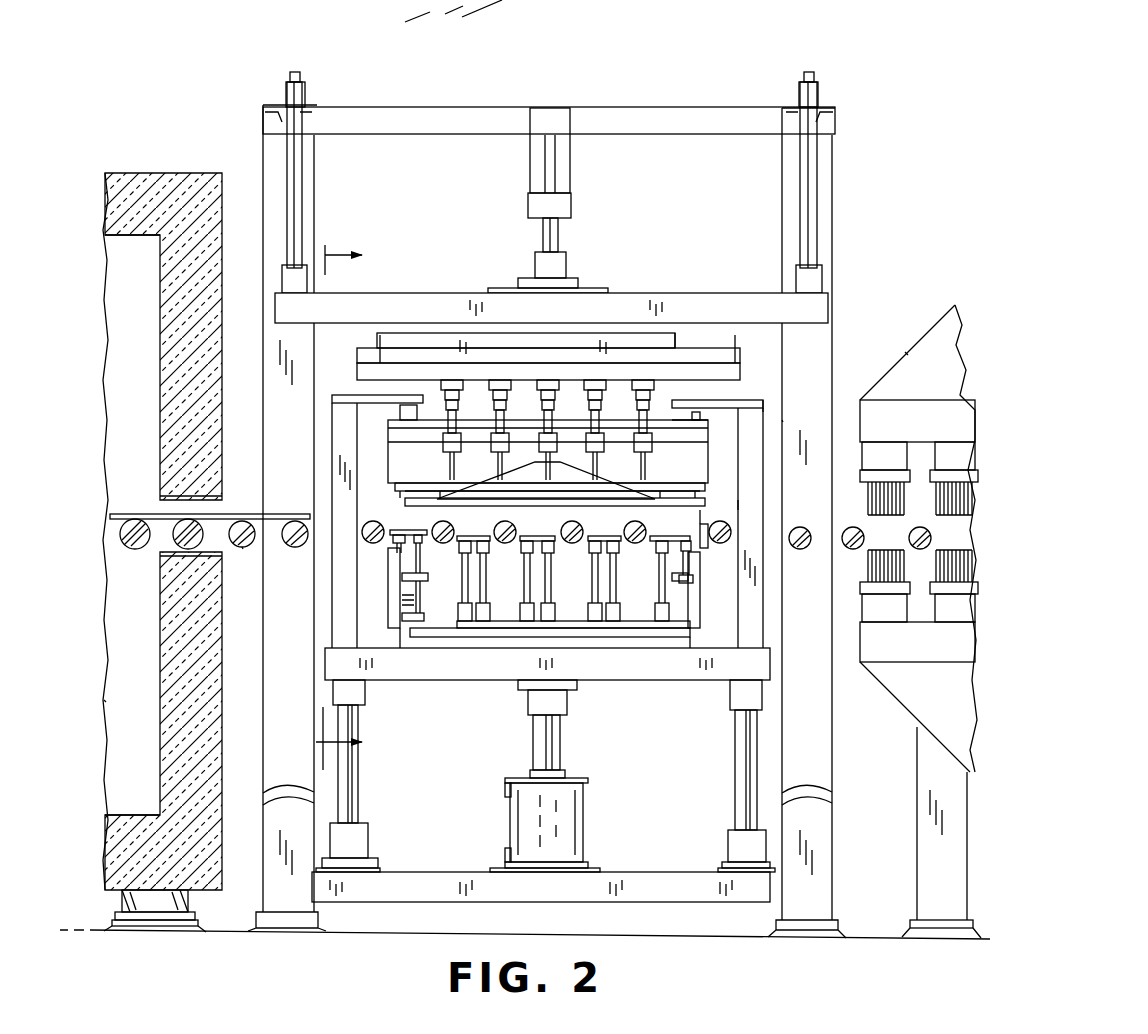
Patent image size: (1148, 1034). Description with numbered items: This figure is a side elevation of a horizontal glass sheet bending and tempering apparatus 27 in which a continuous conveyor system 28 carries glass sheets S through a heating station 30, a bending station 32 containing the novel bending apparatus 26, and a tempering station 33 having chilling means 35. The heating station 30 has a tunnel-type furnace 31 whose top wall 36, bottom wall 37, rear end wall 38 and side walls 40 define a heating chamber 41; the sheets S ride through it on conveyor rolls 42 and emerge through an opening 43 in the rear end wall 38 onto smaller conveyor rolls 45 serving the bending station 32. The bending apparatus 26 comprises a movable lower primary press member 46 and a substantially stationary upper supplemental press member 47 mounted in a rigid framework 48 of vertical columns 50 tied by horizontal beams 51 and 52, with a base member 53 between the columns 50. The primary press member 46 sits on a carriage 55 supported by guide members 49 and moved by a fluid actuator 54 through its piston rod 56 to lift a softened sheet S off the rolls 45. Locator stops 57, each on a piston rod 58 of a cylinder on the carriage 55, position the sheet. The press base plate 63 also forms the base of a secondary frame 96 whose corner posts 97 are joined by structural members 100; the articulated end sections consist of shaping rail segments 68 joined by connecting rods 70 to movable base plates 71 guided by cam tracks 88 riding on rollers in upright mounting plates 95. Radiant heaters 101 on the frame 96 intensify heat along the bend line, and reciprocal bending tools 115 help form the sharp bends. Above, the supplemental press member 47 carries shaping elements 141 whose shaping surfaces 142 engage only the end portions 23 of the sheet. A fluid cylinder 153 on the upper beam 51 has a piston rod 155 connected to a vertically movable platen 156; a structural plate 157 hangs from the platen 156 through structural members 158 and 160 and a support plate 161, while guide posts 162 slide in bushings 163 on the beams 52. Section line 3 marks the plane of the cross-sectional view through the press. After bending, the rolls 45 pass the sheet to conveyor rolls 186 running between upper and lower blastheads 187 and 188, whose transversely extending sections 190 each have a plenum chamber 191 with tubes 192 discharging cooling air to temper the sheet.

The end portions 23 is at (511, 11).
The bending apparatus 26 is at (740, 505).
The horizontal glass sheet bending and tempering apparatus 27 is at (189, 259).
The continuous conveyor system 28 is at (252, 552).
The heating station 30 is at (394, 466).
The furnace 31 is at (155, 523).
The bending station 32 is at (553, 483).
The tempering station 33 is at (885, 546).
The chilling means 35 is at (908, 350).
The top wall 36 is at (135, 192).
The bottom wall 37 is at (120, 845).
The rear end wall 38 is at (205, 640).
The side walls 40 is at (143, 642).
The heating chamber 41 is at (120, 692).
The conveyor rolls 42 is at (150, 540).
The opening 43 is at (175, 500).
The conveyor rolls 45 is at (293, 548).
The lower primary bending press member 46 is at (385, 550).
The upper supplemental bending press member 47 is at (482, 478).
The rigid framework 48 is at (553, 494).
The guide members 49 is at (356, 810).
The vertical columns 50 is at (268, 790).
The horizontal beams 51 is at (597, 107).
The horizontal beams 52 is at (268, 110).
The base member 53 is at (450, 885).
The fluid actuator 54 is at (580, 815).
The carriage 55 is at (620, 668).
The piston rod 56 is at (545, 745).
The locator stops 57 is at (705, 524).
The piston rod 58 is at (696, 552).
The base plate 63 is at (445, 655).
The segments 68 is at (565, 545).
The connecting rods 70 is at (668, 560).
The movable base plate 71 is at (485, 630).
The cam track 88 is at (402, 600).
The upright mounting plate 95 is at (395, 650).
The secondary frame 96 is at (792, 422).
The corner posts 97 is at (345, 430).
The structural members 100 is at (770, 395).
The radiant heaters 101 is at (512, 425).
The reciprocal bending tools 115 is at (400, 502).
The shaping elements 141 is at (600, 481).
The shaping surfaces 142 is at (530, 494).
The fluid cylinder 153 is at (560, 165).
The piston rod 155 is at (548, 230).
The platen 156 is at (430, 300).
The structural plate 157 is at (715, 376).
The structural members 158 is at (400, 350).
The structural members 160 is at (614, 345).
The support plate 161 is at (695, 330).
The guide posts 162 is at (302, 178).
The bushings 163 is at (305, 85).
The conveyor rolls 186 is at (810, 548).
The upper blasthead 187 is at (935, 320).
The lower blasthead 188 is at (902, 700).
The transversely extending sections 190 is at (955, 450).
The plenum chamber 191 is at (920, 462).
The tubes 192 is at (932, 524).
The section line 3- 3 is at (339, 499).
The glass sheet S is at (118, 514).